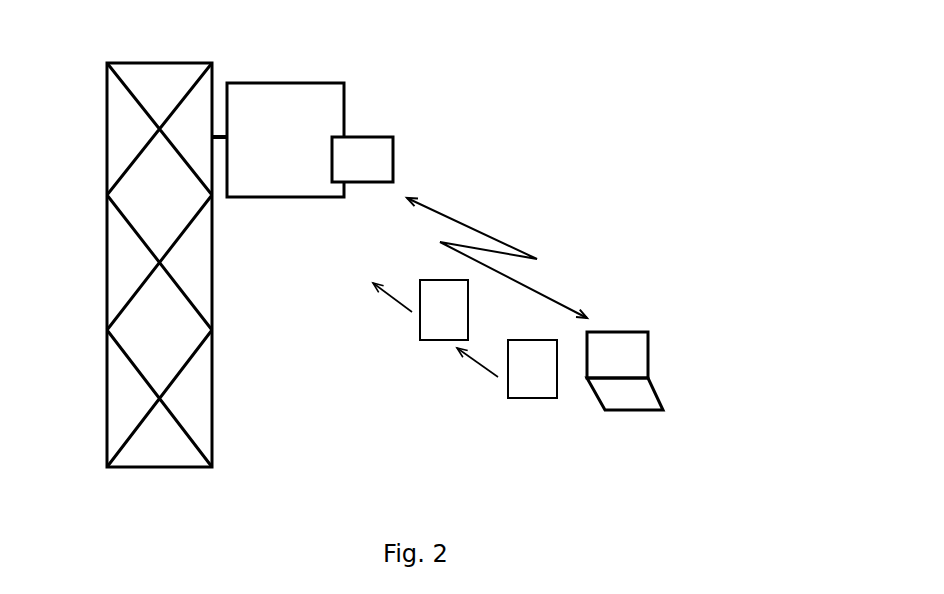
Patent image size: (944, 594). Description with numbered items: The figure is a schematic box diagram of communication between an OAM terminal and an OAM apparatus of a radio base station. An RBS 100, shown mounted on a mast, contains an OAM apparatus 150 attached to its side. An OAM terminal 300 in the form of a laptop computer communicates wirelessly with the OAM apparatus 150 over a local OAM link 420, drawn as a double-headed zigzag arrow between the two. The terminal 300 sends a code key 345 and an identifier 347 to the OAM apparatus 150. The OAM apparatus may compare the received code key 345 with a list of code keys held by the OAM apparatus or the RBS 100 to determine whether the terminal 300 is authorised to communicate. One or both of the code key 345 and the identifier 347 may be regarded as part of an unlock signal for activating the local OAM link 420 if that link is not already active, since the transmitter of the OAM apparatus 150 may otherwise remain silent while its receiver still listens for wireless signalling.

The RBS 100 is at (279, 146).
The OAM apparatus 150 is at (455, 138).
The local OAM link 420 is at (557, 257).
The OAM terminal 300 is at (662, 363).
The code key 345 is at (462, 309).
The identifier 347 is at (552, 369).